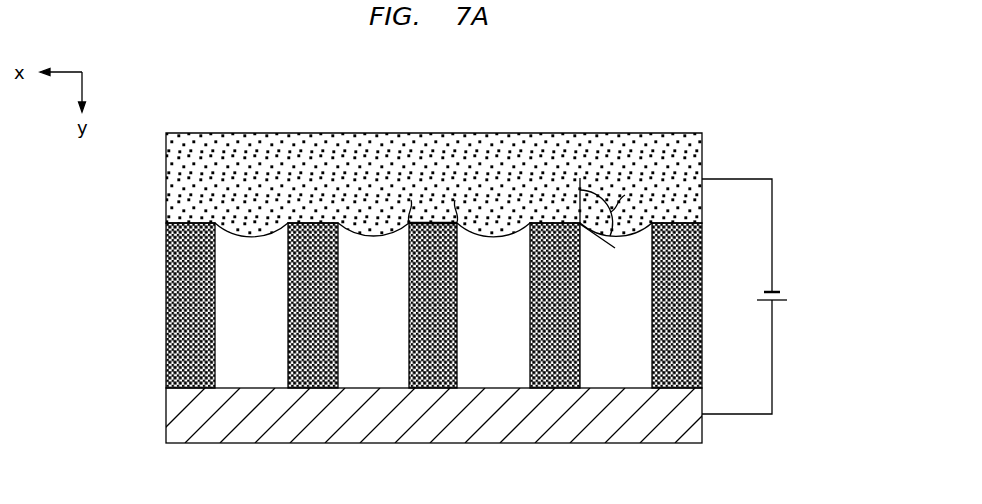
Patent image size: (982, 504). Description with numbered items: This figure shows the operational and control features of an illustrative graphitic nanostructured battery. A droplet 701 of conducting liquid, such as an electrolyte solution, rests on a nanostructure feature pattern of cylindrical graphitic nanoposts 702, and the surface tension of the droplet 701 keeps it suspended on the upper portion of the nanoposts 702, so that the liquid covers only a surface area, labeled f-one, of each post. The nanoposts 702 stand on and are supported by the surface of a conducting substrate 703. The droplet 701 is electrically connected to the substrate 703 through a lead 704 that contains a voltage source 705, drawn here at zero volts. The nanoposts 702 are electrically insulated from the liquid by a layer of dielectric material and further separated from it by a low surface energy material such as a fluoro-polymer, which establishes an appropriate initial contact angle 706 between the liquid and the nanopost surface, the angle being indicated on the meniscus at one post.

The droplet 701 is at (702, 133).
The nanoposts 702 is at (212, 323).
The conducting substrate 703 is at (166, 438).
The lead 704 is at (773, 378).
The voltage source 705 is at (786, 296).
The initial contact angle 706 is at (590, 195).